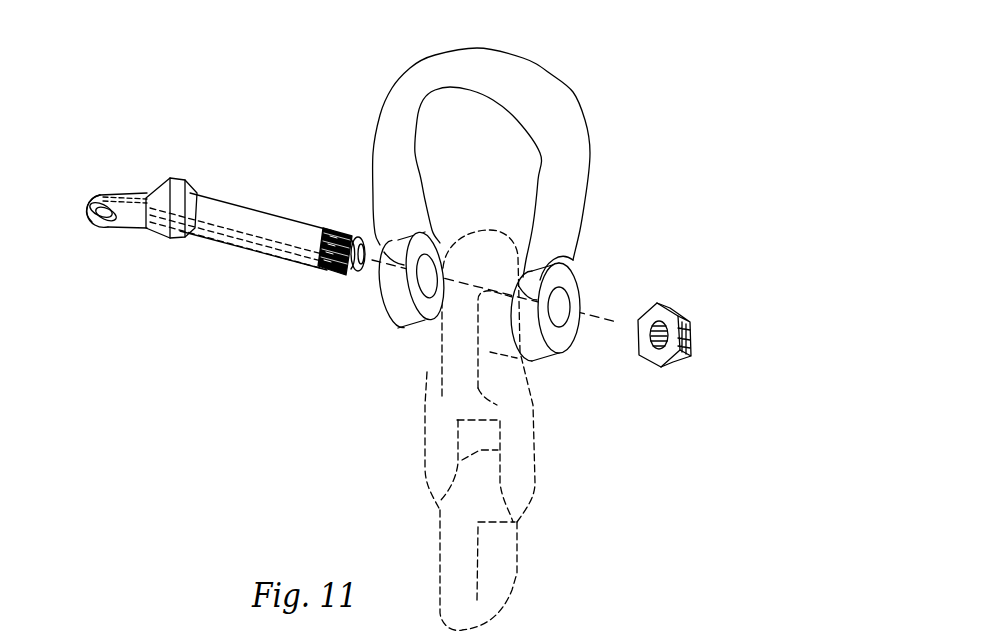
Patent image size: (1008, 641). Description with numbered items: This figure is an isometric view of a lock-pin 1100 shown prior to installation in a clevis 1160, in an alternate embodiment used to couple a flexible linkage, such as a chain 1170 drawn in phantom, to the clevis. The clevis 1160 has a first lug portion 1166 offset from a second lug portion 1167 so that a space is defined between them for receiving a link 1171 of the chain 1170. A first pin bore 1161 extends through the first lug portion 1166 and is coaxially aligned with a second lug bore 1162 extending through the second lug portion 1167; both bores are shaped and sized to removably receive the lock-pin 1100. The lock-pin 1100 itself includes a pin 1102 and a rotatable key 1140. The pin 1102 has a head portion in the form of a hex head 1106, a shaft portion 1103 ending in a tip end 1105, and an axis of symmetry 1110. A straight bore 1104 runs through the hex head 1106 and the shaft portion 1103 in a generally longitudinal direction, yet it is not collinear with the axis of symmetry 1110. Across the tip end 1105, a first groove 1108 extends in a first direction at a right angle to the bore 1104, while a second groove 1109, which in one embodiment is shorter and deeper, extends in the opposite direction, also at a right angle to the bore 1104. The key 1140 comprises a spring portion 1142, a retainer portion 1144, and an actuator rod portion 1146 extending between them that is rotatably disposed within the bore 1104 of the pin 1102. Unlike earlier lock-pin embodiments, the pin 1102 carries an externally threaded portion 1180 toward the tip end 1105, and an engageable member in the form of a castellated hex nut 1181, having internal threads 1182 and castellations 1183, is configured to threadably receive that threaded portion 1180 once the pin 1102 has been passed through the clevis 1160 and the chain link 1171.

The lock-pin 1100 is at (213, 366).
The pin 1102 is at (240, 192).
The shaft portion 1103 is at (291, 229).
The straight bore 1104 is at (202, 243).
The tip end 1105 is at (326, 270).
The hex head 1106 is at (173, 174).
The first groove 1108 is at (361, 238).
The second groove 1109 is at (350, 273).
The axis of symmetry 1110 is at (110, 190).
The rotatable key 1140 is at (85, 197).
The spring portion 1142 is at (100, 229).
The retainer portion 1144 is at (367, 268).
The actuator rod portion 1146 is at (227, 243).
The clevis 1160 is at (591, 83).
The first pin bore 1161 is at (423, 340).
The second lug bore 1162 is at (566, 358).
The first lug portion 1166 is at (432, 230).
The second lug portion 1167 is at (580, 272).
The chain 1170 is at (521, 547).
The link 1171 is at (461, 238).
The externally threaded portion 1180 is at (340, 270).
The castellated hex nut 1181 is at (651, 369).
The internal threads 1182 is at (632, 348).
The castellations 1183 is at (682, 355).